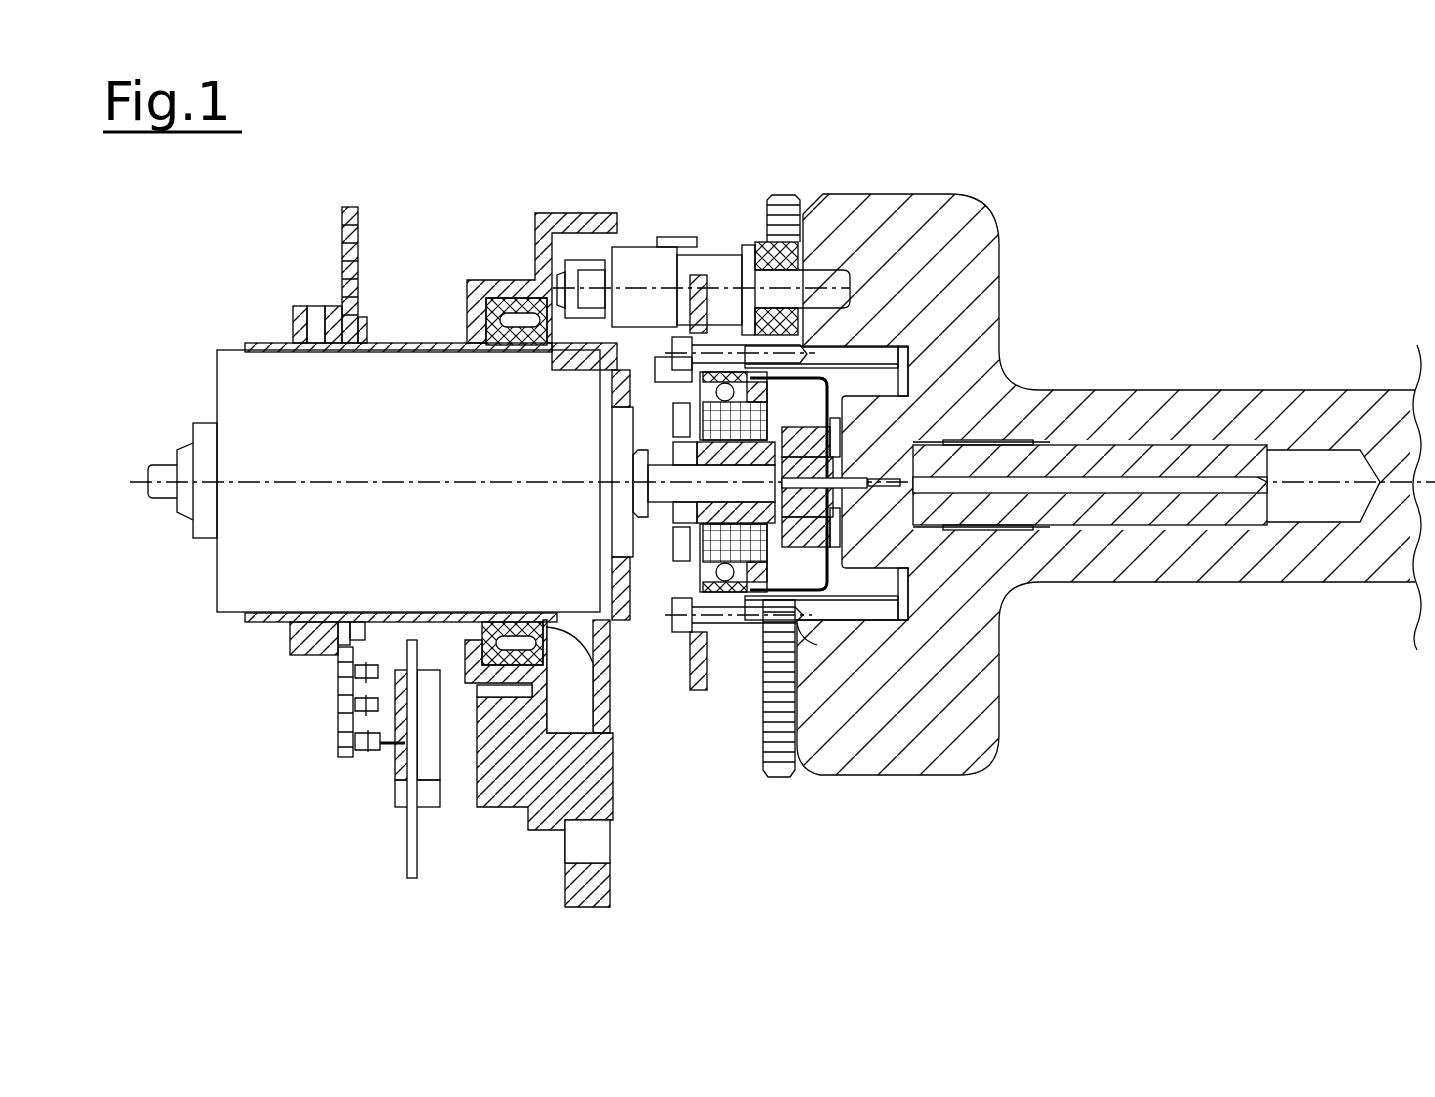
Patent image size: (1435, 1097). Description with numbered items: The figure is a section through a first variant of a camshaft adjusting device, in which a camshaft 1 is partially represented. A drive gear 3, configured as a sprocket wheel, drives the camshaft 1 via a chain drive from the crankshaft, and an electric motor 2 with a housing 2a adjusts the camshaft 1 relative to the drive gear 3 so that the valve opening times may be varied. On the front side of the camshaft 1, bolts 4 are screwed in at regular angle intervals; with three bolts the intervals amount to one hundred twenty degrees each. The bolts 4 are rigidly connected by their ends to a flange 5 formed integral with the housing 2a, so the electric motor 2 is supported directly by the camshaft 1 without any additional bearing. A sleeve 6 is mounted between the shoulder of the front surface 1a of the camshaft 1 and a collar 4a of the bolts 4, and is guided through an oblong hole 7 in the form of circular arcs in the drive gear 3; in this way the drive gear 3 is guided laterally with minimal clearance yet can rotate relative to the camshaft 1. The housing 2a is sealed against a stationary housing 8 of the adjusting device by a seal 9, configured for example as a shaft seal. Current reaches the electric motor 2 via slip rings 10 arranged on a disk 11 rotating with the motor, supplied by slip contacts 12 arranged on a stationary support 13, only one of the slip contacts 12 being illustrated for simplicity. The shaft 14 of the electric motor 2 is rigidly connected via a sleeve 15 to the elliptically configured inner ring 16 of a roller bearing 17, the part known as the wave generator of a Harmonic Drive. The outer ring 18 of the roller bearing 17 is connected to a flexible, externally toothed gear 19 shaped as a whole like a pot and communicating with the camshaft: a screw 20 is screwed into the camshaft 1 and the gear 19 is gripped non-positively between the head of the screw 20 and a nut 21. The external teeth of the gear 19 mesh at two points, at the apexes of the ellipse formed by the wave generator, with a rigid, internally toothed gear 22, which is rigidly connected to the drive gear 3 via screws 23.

The camshaft 1 is at (985, 652).
The front surface of the camshaft 1a is at (803, 738).
The electric motor 2 is at (262, 370).
The housing of the electric motor 2a is at (408, 343).
The drive gear 3 is at (803, 260).
The bolts 4 is at (713, 272).
The collar of the bolts 4a is at (745, 252).
The flange 5 is at (602, 683).
The sleeve 6 is at (762, 250).
The oblong hole 7 is at (787, 220).
The stationary housing 8 is at (580, 230).
The seal 9 is at (500, 300).
The slip rings 10 is at (358, 705).
The disk 11 is at (343, 732).
The slip contacts 12 is at (378, 752).
The stationary support 13 is at (410, 788).
The shaft of the electric motor 14 is at (655, 490).
The sleeve 15 is at (672, 522).
The inner ring 16 is at (703, 410).
The roller bearing 17 is at (757, 388).
The outer ring 18 is at (700, 632).
The flexible externally toothed gear 19 is at (817, 603).
The screw 20 is at (1113, 510).
The nut 21 is at (805, 528).
The internally toothed gear 22 is at (720, 628).
The screws 23 is at (748, 620).